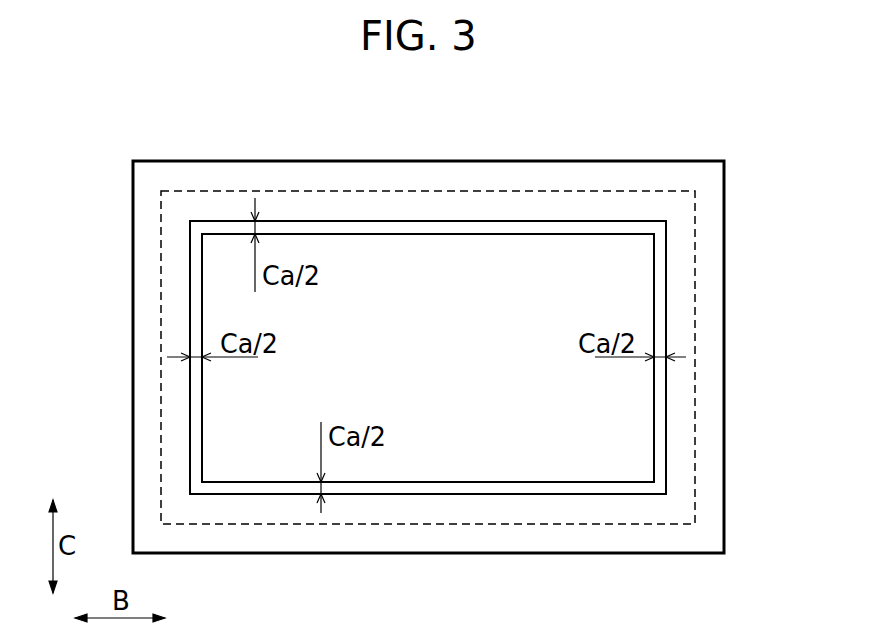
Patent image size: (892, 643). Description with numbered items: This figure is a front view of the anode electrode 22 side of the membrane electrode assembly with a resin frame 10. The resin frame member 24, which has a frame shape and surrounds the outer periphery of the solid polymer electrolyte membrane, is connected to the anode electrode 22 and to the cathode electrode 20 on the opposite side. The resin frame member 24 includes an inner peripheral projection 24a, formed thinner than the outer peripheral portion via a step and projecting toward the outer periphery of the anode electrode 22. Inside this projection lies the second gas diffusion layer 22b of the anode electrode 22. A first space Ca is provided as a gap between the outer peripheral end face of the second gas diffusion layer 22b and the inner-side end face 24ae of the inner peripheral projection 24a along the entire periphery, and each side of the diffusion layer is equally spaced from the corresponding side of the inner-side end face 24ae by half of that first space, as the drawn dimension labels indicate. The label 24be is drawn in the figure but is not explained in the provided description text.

The membrane electrode assembly with a resin frame 10 is at (520, 82).
The cathode electrode 20 is at (556, 525).
The anode electrode 22 is at (443, 462).
The second gas diffusion layer 22b is at (257, 453).
The resin frame member 24 is at (729, 157).
The inner peripheral projection 24a is at (452, 207).
The inner-side end face 24ae is at (312, 222).
The inner edge of light shielding portion 24be is at (527, 234).